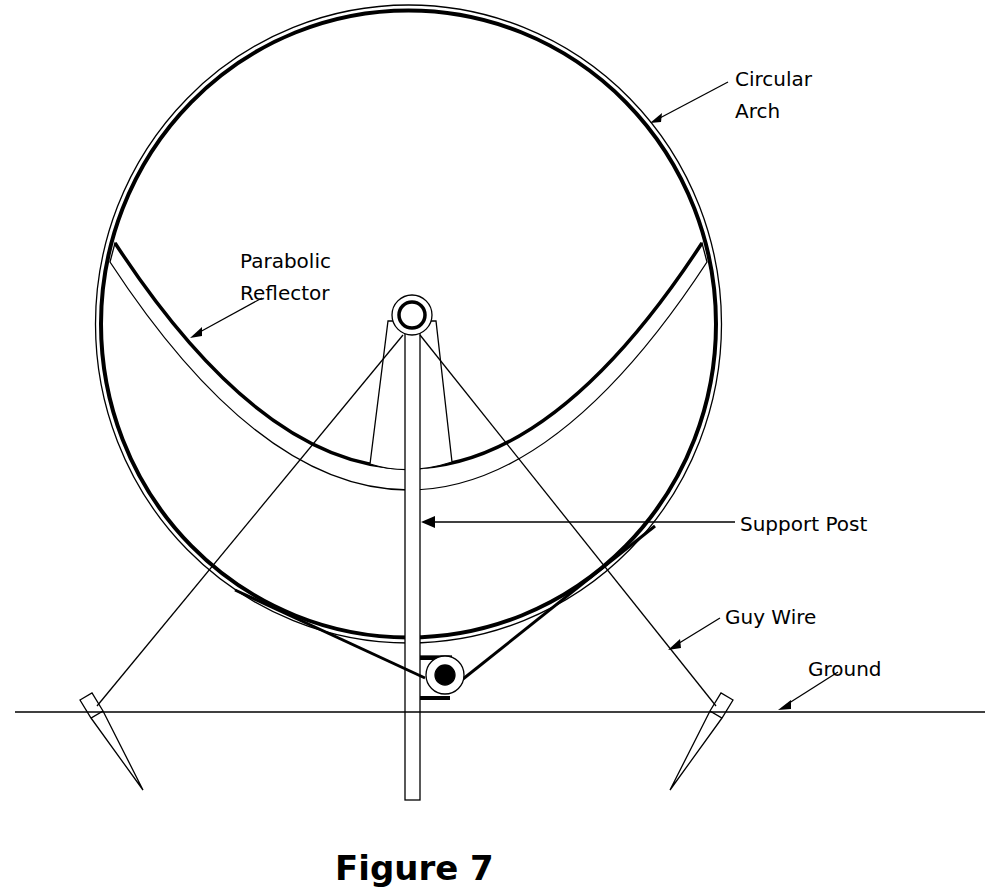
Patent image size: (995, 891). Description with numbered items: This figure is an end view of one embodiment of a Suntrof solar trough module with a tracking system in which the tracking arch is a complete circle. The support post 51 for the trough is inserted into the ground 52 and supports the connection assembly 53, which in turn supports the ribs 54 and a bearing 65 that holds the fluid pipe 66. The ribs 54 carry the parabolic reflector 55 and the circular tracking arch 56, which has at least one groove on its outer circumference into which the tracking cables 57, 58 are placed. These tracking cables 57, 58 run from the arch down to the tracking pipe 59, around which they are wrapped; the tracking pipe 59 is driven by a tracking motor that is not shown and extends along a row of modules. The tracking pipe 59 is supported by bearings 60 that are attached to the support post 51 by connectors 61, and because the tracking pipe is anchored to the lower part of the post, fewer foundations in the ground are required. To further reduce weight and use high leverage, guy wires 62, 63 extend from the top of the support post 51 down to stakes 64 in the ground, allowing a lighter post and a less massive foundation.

The support post 51 is at (402, 582).
The ground 52 is at (290, 711).
The connection assembly 53 is at (453, 430).
The ribs 54 is at (408, 366).
The parabolic reflector 55 is at (590, 354).
The circular tracking arch 56 is at (690, 206).
The tracking cable 57 is at (382, 663).
The tracking cable 58 is at (533, 630).
The tracking pipe 59 is at (473, 658).
The bearings 60 is at (463, 687).
The connectors 61 is at (436, 655).
The guy wire 62 is at (264, 499).
The guy wire 63 is at (541, 481).
The stakes 64 is at (88, 694).
The bearing 65 is at (440, 295).
The fluid pipe 66 is at (432, 315).